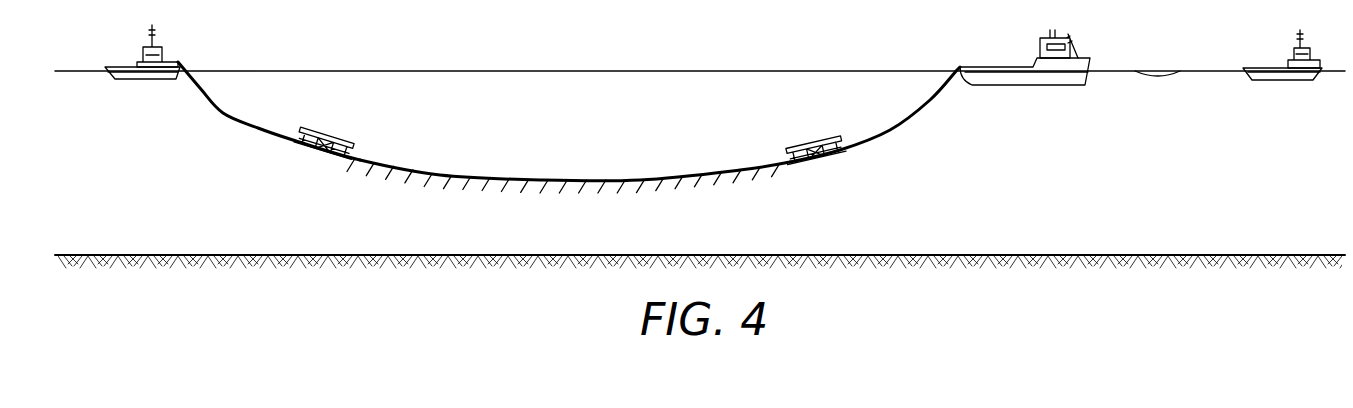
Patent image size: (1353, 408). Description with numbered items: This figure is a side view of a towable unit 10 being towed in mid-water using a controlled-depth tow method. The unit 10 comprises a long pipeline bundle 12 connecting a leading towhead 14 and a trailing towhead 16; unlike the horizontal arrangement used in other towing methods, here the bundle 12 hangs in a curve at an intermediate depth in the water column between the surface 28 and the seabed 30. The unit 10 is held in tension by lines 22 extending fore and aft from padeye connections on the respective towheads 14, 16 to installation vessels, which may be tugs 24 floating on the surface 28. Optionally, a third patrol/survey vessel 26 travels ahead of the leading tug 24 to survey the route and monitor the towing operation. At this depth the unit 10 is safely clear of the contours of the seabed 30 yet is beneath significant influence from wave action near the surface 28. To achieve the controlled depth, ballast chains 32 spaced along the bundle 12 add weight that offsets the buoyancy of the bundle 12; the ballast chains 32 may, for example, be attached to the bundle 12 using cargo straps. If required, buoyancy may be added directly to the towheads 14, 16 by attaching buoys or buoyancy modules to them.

The towable unit 10 is at (739, 90).
The pipeline bundle 12 is at (586, 178).
The leading towhead 14 is at (817, 138).
The trailing towhead 16 is at (333, 136).
The lines 22 is at (223, 114).
The tugs 24 is at (119, 66).
The patrol/survey vessel 26 is at (1256, 66).
The surface 28 is at (1160, 70).
The seabed 30 is at (1286, 262).
The ballast chains 32 is at (456, 190).